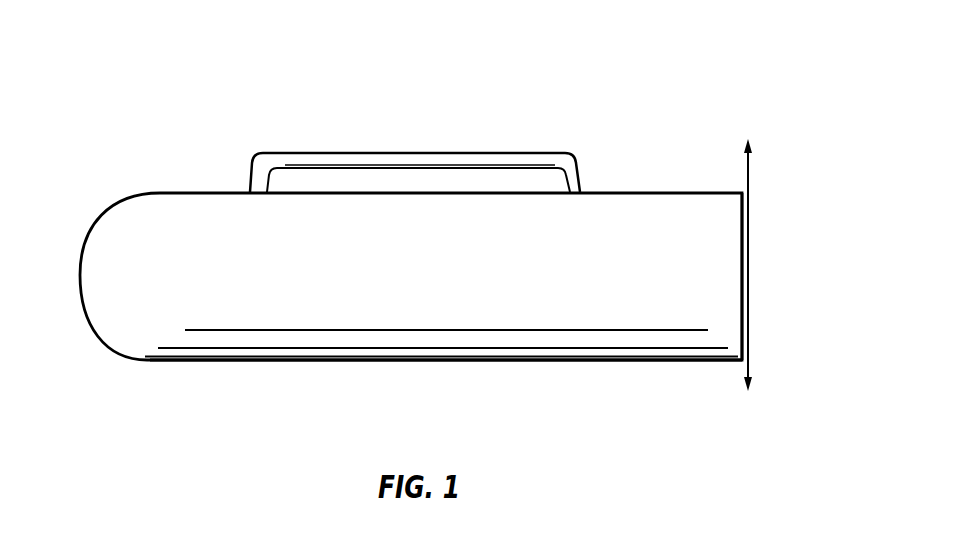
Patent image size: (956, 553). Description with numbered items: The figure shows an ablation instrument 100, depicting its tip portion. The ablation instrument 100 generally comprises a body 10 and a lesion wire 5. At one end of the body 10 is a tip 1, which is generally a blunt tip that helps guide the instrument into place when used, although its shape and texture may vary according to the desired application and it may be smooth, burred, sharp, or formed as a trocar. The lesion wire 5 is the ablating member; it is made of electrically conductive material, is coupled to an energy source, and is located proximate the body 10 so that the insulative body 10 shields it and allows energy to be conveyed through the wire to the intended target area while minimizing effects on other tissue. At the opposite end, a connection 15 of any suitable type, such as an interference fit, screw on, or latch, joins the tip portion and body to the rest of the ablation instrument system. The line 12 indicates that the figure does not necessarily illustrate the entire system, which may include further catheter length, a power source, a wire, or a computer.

The ablation instrument 100 is at (500, 70).
The tip 1 is at (77, 267).
The lesion wire 5 is at (463, 153).
The body 10 is at (423, 362).
The line 12 is at (748, 182).
The connection 15 is at (768, 253).